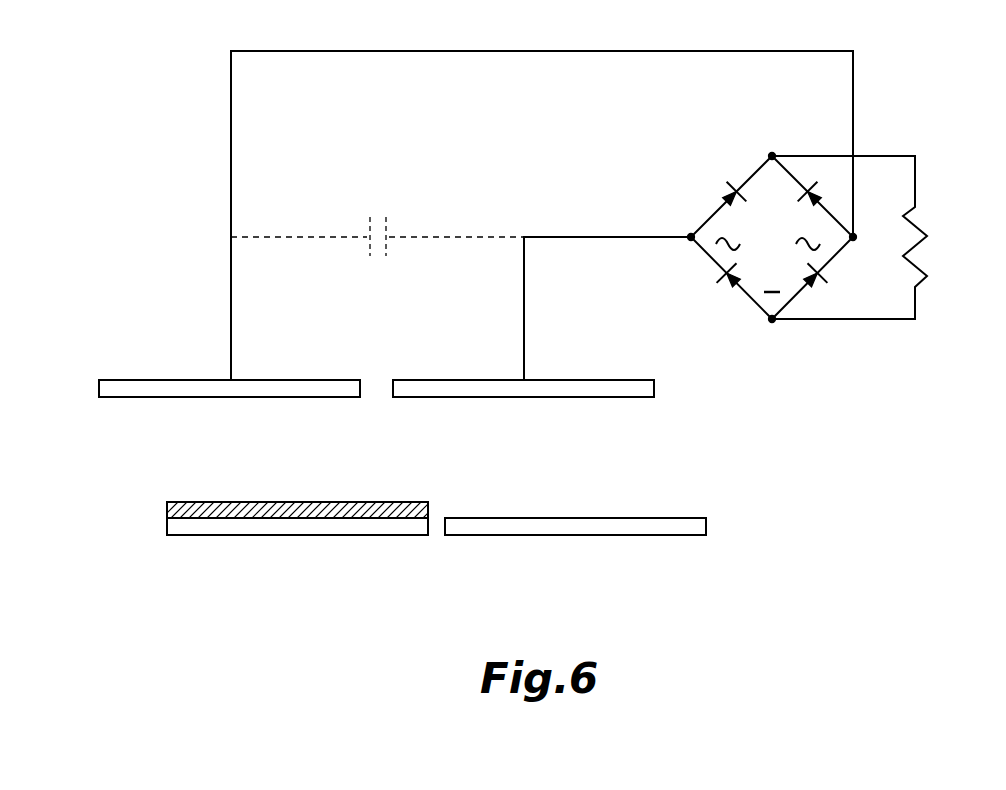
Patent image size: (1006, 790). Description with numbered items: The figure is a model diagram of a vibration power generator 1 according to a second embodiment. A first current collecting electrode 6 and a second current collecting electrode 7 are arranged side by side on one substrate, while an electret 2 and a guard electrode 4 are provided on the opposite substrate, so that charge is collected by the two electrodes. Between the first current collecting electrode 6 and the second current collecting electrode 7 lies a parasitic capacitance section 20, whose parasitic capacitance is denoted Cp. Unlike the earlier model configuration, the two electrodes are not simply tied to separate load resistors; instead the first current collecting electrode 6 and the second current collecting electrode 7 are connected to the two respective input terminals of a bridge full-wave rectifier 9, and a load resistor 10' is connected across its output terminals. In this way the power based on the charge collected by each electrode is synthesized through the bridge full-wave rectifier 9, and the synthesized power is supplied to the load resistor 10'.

The vibration power generator 1 is at (906, 548).
The electret 2 is at (415, 501).
The guard electrode 4 is at (547, 536).
The first current collecting electrode 6 is at (187, 398).
The second current collecting electrode 7 is at (556, 398).
The bridge full-wave rectifier 9 is at (753, 303).
The load resistor 10' is at (875, 237).
The parasitic capacitance section 20 is at (386, 216).